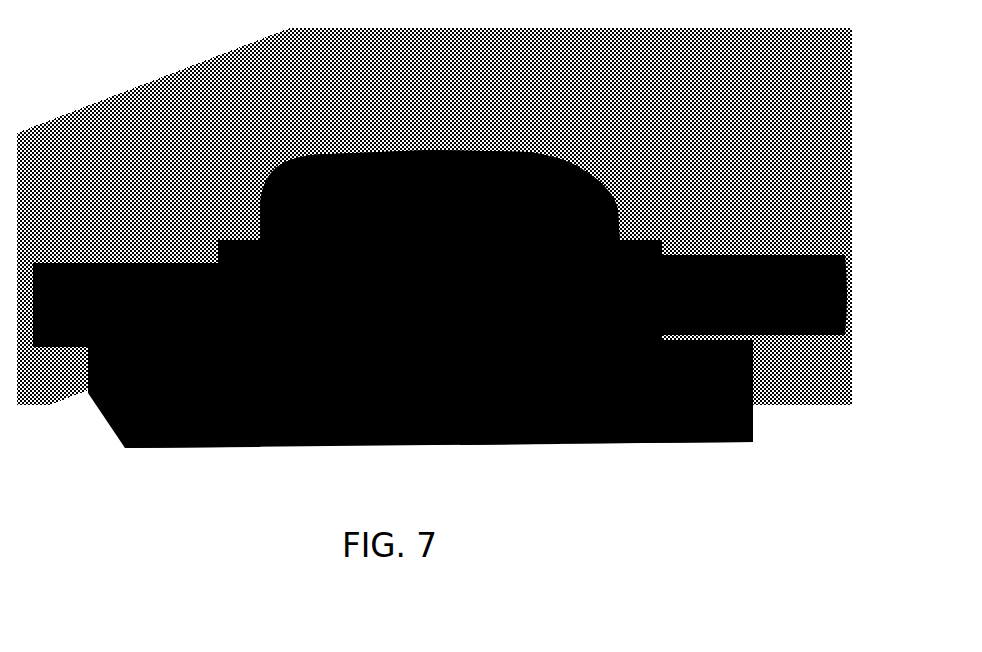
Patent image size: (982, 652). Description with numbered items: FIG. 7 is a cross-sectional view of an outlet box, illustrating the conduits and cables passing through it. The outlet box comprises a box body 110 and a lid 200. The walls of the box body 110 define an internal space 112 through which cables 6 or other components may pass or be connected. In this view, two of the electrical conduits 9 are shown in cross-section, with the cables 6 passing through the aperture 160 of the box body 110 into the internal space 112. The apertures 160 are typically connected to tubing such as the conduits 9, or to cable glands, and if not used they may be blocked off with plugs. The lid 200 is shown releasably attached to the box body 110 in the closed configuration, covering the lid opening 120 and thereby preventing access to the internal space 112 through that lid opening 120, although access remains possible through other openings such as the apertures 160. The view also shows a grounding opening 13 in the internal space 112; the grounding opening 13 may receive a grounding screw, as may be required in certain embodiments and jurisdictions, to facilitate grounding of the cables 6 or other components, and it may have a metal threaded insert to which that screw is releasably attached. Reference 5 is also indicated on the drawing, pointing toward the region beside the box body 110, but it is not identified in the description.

The mounting surface 5 is at (778, 411).
The cables 6 is at (78, 349).
The electrical conduits 9 is at (50, 236).
The grounding opening 13 is at (318, 450).
The box body 110 is at (640, 216).
The internal space 112 is at (598, 443).
The lid opening 120 is at (506, 148).
The apertures 160 is at (230, 450).
The lid 200 is at (600, 142).